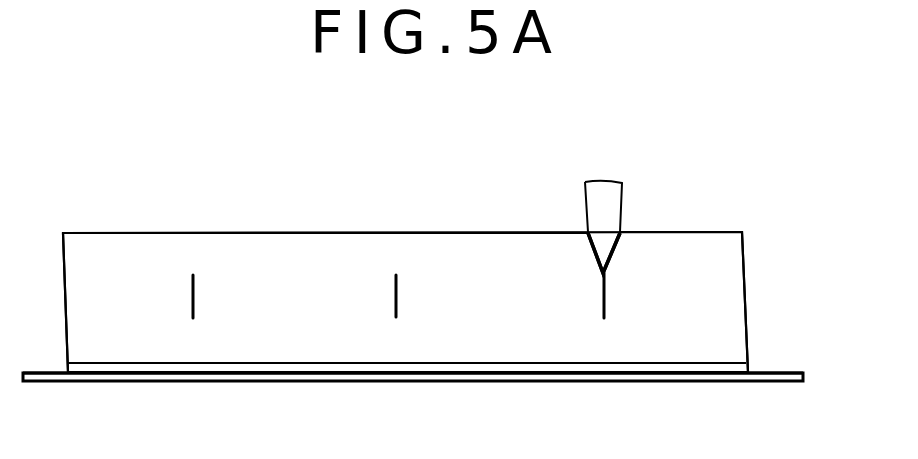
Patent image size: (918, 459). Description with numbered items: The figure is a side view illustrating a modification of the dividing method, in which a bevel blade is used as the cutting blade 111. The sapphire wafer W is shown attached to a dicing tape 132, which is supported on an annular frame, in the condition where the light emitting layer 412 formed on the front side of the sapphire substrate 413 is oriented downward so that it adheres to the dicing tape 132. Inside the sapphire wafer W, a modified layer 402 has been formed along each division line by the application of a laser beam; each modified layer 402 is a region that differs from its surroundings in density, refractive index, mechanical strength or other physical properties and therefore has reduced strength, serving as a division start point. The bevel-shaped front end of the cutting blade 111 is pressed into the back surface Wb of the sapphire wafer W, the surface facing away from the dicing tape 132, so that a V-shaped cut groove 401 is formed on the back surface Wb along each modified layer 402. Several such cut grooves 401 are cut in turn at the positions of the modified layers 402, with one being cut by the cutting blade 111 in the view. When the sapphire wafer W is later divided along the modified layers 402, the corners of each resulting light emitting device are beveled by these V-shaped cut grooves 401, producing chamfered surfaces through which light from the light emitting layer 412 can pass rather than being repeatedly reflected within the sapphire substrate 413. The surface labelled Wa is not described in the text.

The cutting blade 111 is at (583, 208).
The cut groove 401 is at (597, 242).
The modified layer 402 is at (197, 293).
The sapphire substrate 413 is at (747, 278).
The light emitting layer 412 is at (697, 373).
The dicing tape 132 is at (772, 372).
The sapphire wafer W is at (722, 210).
The back surface of workpiece Wa is at (522, 377).
The back surface Wb is at (468, 232).